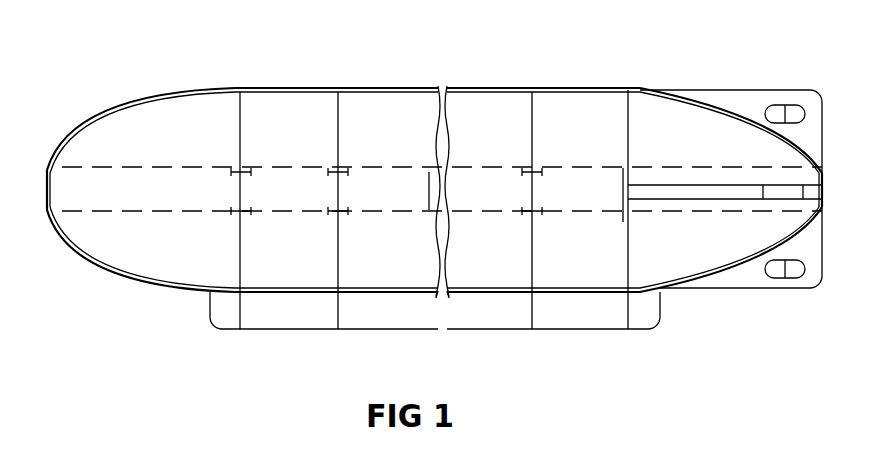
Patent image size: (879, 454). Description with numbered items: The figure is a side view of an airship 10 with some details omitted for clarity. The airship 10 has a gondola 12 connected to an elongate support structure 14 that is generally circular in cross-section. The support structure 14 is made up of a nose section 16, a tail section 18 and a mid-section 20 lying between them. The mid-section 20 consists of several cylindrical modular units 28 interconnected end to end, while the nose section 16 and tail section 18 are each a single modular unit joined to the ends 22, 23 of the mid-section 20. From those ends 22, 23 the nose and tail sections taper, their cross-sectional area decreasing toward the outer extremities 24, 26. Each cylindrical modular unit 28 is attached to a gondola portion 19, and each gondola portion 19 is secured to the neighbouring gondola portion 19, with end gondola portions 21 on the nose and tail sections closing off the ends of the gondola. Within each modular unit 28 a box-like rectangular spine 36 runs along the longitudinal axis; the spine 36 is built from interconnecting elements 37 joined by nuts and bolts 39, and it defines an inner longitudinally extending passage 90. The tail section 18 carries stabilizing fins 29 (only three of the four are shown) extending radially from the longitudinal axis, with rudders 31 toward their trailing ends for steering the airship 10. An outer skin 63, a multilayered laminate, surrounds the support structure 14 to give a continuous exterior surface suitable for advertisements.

The airship 10 is at (328, 44).
The gondola 12 is at (342, 347).
The support structure 14 is at (271, 112).
The nose section 16 is at (118, 232).
The tail section 18 is at (657, 112).
The gondola portion 19 is at (277, 331).
The mid-section 20 is at (470, 110).
The end gondola portion 21 is at (213, 306).
The end of the mid-section 22 is at (631, 168).
The end of the mid-section 23 is at (226, 190).
The outer extremity of the nose section 24 is at (39, 177).
The outer extremity of the tail section 26 is at (834, 197).
The cylindrical modular unit 28 is at (369, 113).
The stabilizing fin 29 is at (802, 142).
The rudder 31 is at (793, 112).
The spine 36 is at (381, 187).
The interconnecting element 37 is at (260, 193).
The nuts and bolts 39 is at (326, 224).
The outer skin 63 is at (113, 118).
The inner longitudinally extending passage 90 is at (591, 208).